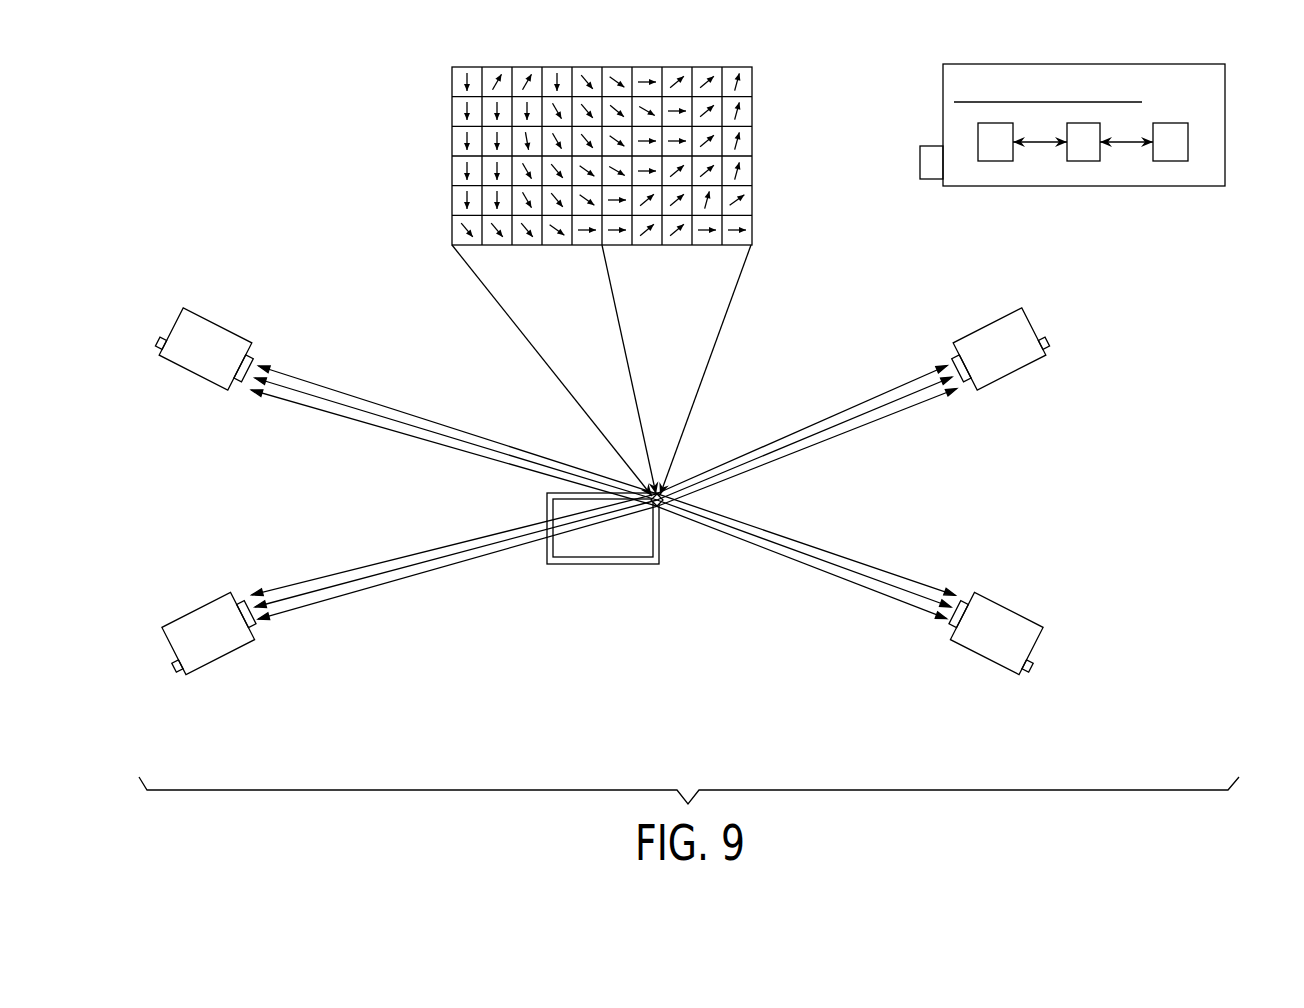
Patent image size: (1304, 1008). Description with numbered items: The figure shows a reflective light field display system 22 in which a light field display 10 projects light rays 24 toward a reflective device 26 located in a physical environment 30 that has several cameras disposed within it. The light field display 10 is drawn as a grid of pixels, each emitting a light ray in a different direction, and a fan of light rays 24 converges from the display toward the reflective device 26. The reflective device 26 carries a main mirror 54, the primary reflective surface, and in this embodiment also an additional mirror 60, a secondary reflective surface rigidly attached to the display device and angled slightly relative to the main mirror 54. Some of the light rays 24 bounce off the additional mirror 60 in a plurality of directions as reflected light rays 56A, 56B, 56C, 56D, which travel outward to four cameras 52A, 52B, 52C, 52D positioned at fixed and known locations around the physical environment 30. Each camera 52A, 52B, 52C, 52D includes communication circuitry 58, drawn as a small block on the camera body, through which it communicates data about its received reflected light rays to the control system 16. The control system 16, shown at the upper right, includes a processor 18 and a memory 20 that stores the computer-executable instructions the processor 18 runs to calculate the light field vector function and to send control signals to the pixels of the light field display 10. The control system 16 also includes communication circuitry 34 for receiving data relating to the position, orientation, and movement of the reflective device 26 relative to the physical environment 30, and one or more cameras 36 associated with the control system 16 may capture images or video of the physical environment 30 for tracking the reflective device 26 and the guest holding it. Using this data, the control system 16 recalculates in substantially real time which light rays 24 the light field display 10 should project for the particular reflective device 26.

The light field display 10 is at (453, 113).
The control system 16 is at (1227, 126).
The processor 18 is at (1087, 162).
The memory 20 is at (997, 162).
The reflective light field display system 22 is at (268, 213).
The light rays 24 is at (490, 317).
The reflective device 26 is at (612, 578).
The physical environment 30 is at (767, 372).
The communication circuitry 34 is at (1173, 162).
The cameras 36 is at (932, 180).
The camera 52A is at (187, 362).
The camera 52B is at (187, 644).
The camera 52C is at (976, 362).
The camera 52D is at (976, 644).
The mirror 54 is at (578, 538).
The reflected light rays 56A is at (397, 442).
The reflected light rays 56B is at (385, 607).
The reflected light rays 56C is at (867, 447).
The reflected light rays 56D is at (842, 603).
The communication circuitry 58 is at (163, 349).
The additional mirror 60 is at (663, 507).